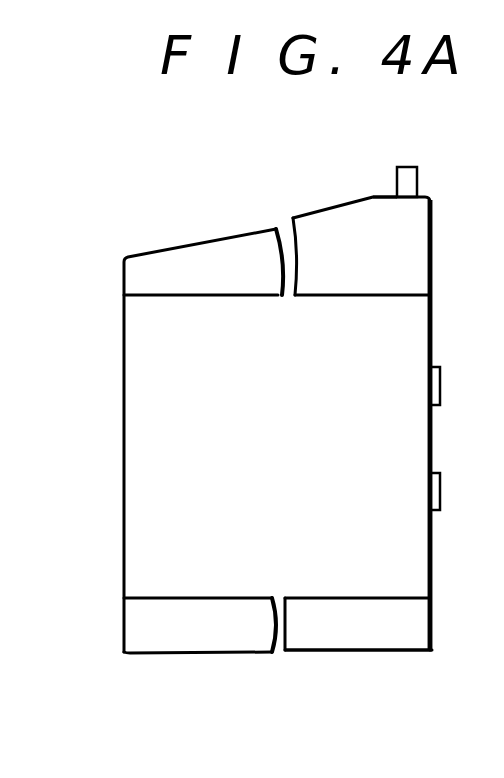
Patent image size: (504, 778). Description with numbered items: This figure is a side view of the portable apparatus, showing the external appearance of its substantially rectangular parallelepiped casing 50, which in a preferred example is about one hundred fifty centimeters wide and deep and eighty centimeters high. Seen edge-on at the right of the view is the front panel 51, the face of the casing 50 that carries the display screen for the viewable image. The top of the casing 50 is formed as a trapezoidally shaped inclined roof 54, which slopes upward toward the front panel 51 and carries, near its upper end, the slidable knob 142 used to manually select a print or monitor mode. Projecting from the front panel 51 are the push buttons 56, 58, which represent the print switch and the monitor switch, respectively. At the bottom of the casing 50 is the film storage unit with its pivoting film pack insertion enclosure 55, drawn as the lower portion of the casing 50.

The casing 50 is at (106, 285).
The front panel 51 is at (432, 309).
The inclined roof 54 is at (378, 196).
The film pack insertion enclosure 55 is at (433, 628).
The push button 56 is at (441, 387).
The push button 58 is at (441, 486).
The slidable knob 142 is at (418, 173).